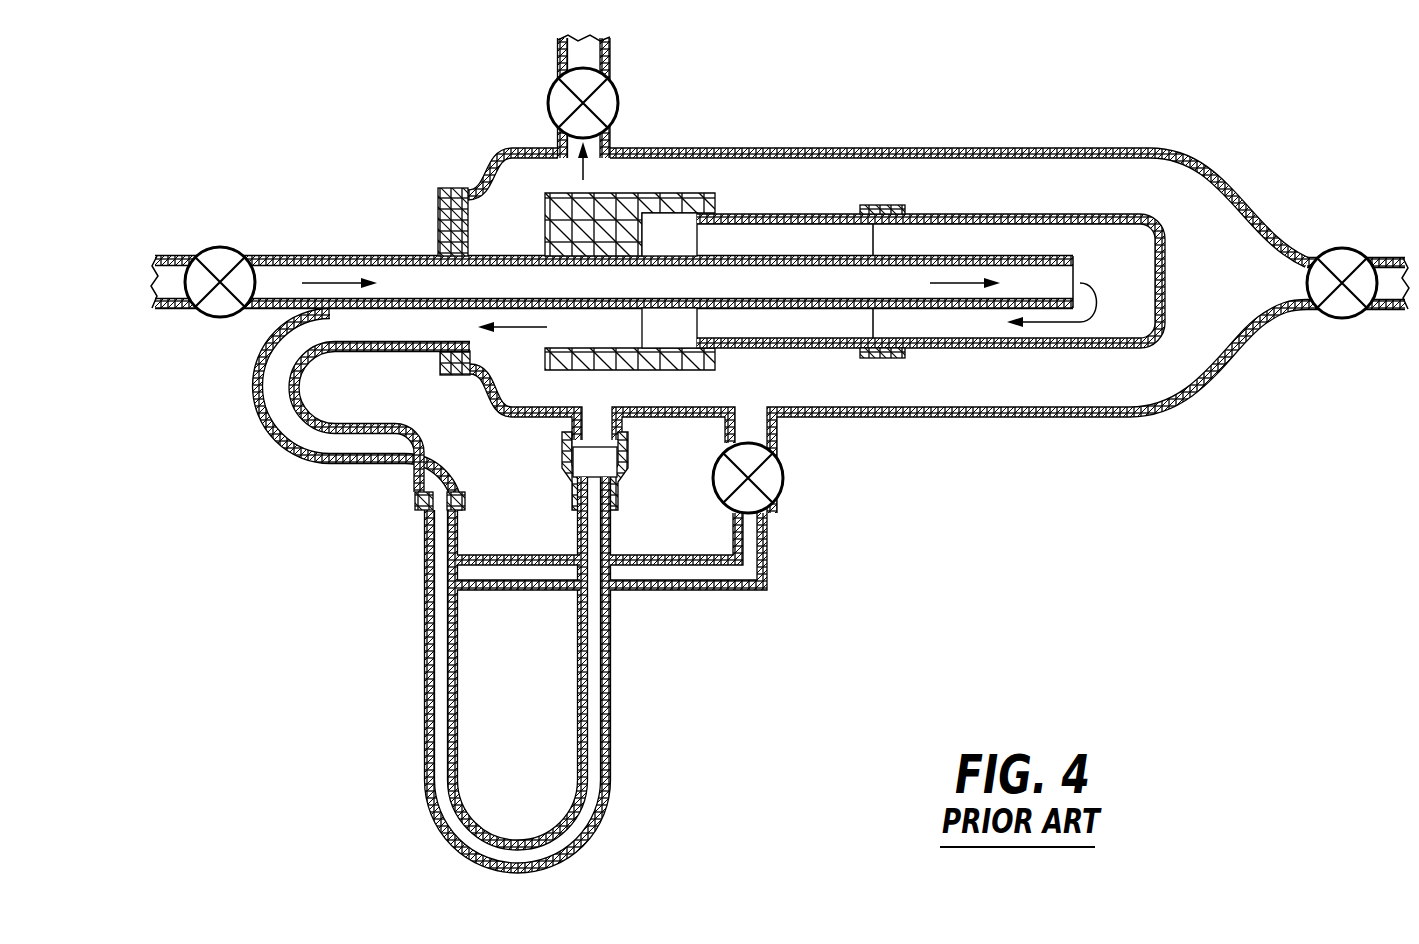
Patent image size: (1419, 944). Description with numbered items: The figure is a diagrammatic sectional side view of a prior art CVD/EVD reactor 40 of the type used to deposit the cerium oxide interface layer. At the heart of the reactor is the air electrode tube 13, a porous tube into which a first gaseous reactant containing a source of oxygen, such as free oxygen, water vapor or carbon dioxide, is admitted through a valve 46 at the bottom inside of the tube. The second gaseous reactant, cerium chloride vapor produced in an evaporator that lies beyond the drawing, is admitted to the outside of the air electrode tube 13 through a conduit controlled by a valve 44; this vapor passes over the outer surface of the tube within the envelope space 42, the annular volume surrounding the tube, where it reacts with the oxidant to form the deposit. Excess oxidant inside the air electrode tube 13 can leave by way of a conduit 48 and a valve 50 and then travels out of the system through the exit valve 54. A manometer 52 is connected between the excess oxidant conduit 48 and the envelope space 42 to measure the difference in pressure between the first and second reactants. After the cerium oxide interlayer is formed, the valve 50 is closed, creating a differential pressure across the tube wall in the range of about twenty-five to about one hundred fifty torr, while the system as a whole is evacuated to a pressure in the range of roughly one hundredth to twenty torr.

The air electrode tube 13 is at (1052, 206).
The CVD/EVD reactor 40 is at (962, 486).
The envelope space 42 is at (1176, 387).
The valve 44 is at (1338, 248).
The valve 46 is at (218, 247).
The conduit 48 is at (304, 458).
The valve 50 is at (787, 483).
The manometer 52 is at (612, 703).
The exit valve 54 is at (618, 102).